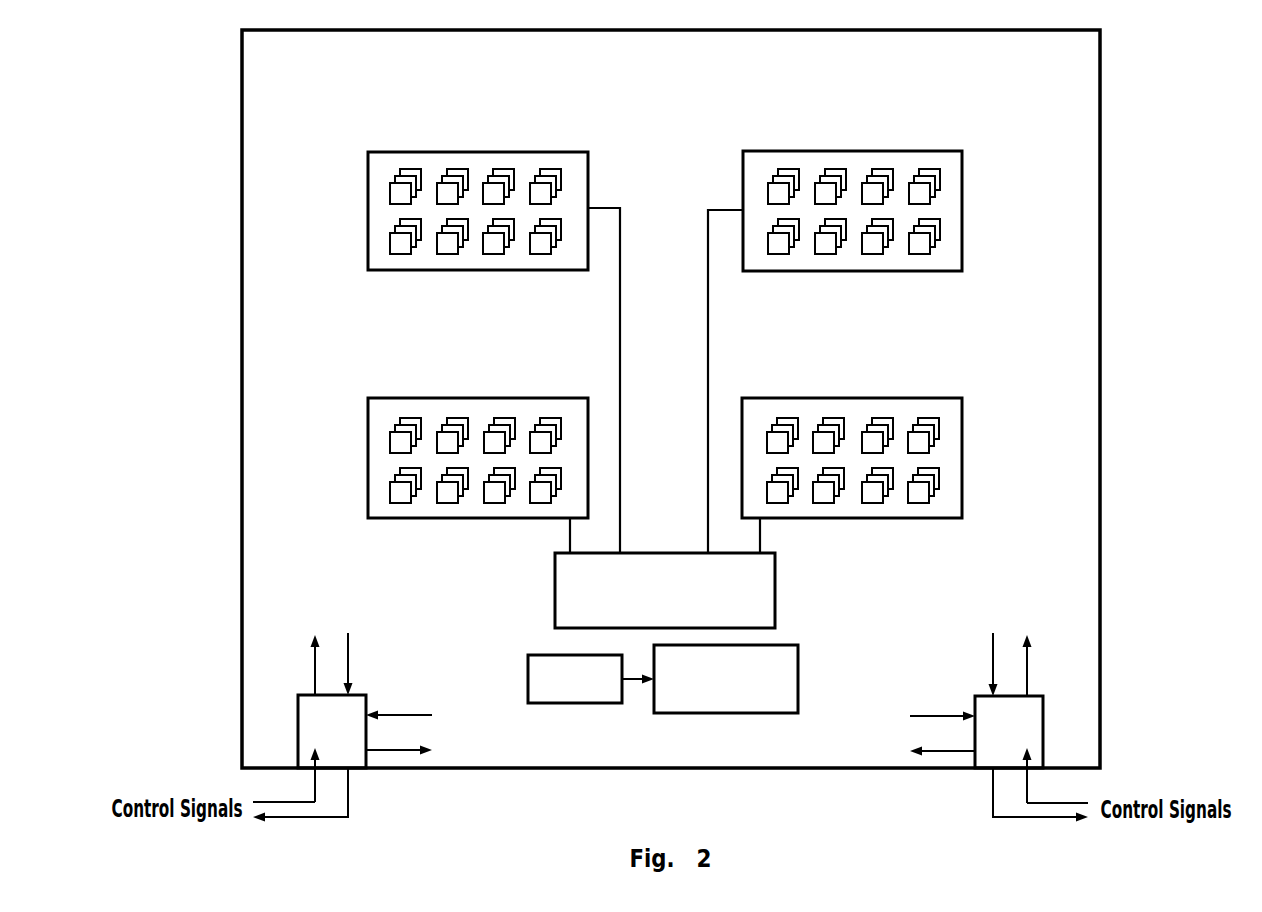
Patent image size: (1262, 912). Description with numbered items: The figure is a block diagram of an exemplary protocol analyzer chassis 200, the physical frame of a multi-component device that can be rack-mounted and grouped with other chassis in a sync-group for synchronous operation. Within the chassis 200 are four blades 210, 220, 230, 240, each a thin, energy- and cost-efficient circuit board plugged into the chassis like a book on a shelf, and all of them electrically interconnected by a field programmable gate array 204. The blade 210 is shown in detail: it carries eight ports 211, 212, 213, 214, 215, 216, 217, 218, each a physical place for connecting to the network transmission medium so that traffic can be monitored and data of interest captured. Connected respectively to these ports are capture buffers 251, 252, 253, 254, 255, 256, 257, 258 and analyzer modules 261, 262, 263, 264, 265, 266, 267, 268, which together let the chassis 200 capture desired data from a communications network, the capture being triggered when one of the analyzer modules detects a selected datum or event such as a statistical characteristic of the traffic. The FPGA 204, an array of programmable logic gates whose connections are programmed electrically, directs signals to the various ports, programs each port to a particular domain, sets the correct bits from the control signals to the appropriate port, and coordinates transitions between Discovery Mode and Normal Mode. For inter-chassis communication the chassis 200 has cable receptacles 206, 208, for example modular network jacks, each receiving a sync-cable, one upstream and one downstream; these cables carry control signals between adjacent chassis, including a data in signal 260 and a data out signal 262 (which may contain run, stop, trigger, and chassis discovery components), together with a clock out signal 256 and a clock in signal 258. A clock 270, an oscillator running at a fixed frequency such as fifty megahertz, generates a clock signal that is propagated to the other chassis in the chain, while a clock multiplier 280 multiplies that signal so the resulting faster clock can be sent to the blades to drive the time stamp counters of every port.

The protocol analyzer chassis 200 is at (196, 623).
The field programmable gate array 204 is at (775, 592).
The cable receptacle 206 is at (298, 720).
The cable receptacle 208 is at (1033, 721).
The blade 210 is at (368, 182).
The blade 220 is at (368, 428).
The blade 230 is at (962, 180).
The blade 240 is at (962, 418).
The port 211 is at (390, 188).
The port 212 is at (439, 184).
The port 213 is at (487, 183).
The port 214 is at (543, 193).
The port 215 is at (390, 246).
The port 216 is at (440, 255).
The port 217 is at (490, 255).
The port 218 is at (542, 255).
The capture buffer 251 is at (395, 181).
The capture buffer 252 is at (446, 178).
The capture buffer 253 is at (493, 177).
The capture buffer 254 is at (556, 178).
The capture buffer 255 is at (396, 230).
The capture buffer 256 is at (458, 250).
The capture buffer 257 is at (503, 250).
The capture buffer 258 is at (552, 250).
The analyzer module 261 is at (403, 172).
The analyzer module 262 is at (452, 172).
The analyzer module 263 is at (501, 170).
The analyzer module 264 is at (560, 170).
The analyzer module 265 is at (403, 222).
The analyzer module 266 is at (468, 243).
The analyzer module 267 is at (510, 243).
The analyzer module 268 is at (558, 243).
The data in signal 260 is at (315, 660).
The clock 270 is at (577, 703).
The clock multiplier 280 is at (727, 713).